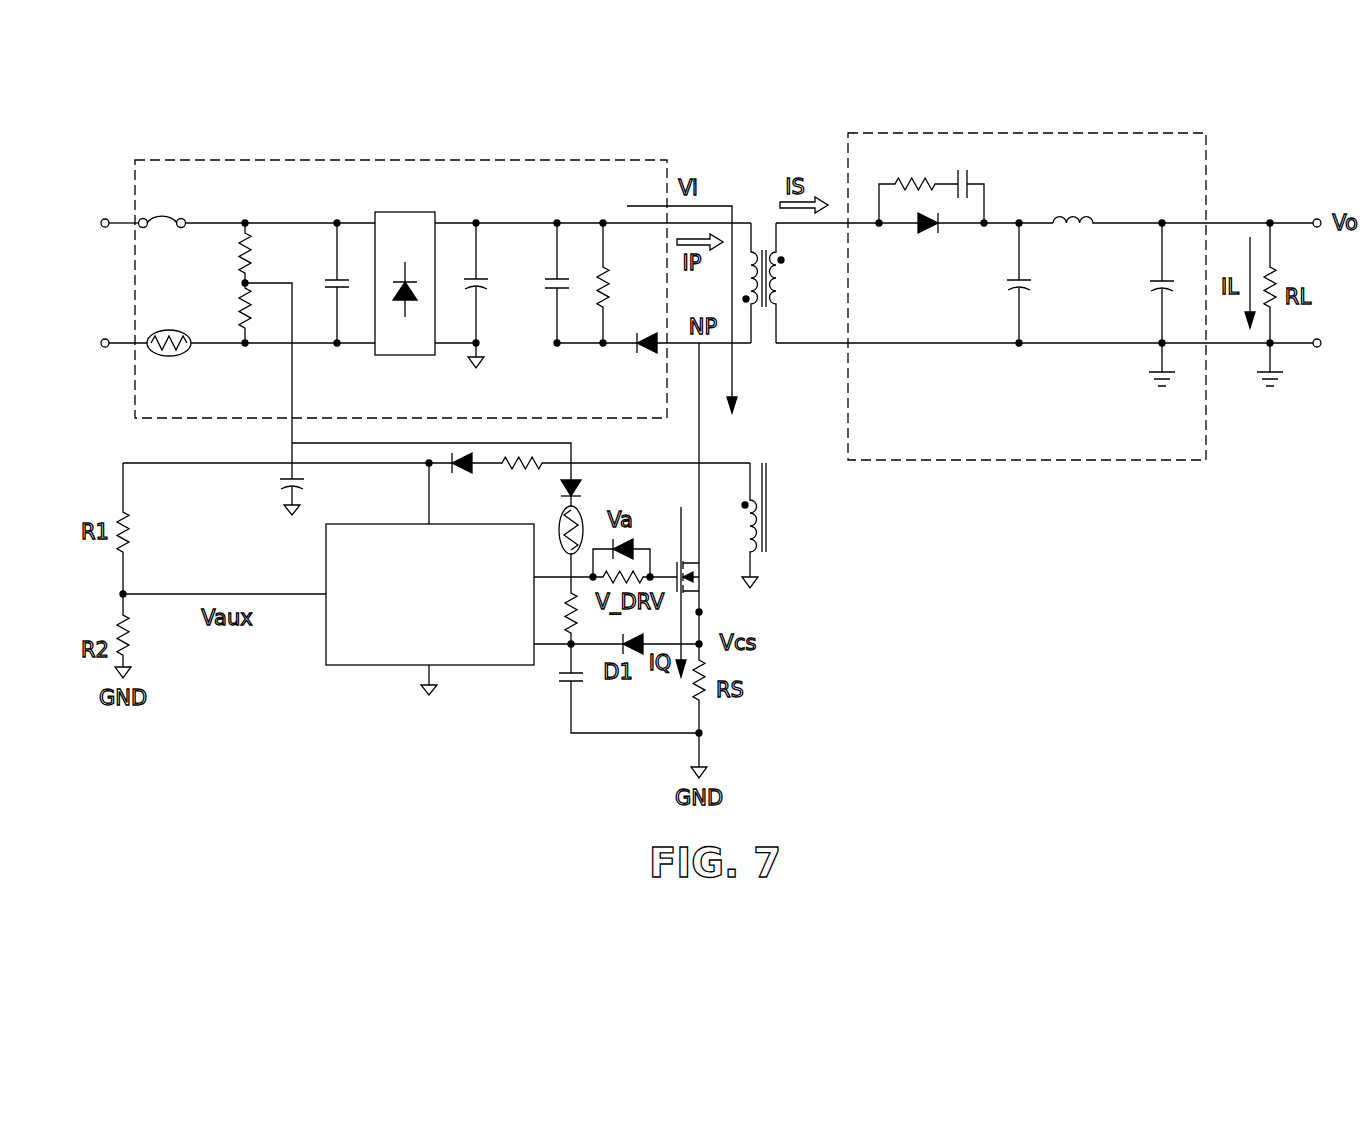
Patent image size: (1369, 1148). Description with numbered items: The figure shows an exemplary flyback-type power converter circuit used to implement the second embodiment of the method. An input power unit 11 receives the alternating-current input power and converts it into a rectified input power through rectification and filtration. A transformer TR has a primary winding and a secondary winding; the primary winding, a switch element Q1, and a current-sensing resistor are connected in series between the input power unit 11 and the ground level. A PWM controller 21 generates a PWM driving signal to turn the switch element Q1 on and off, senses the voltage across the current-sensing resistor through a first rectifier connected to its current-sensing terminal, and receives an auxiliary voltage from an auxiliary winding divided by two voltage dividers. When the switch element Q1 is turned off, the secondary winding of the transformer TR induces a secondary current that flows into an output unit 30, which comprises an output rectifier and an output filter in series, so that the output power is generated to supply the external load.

The input power unit 11 is at (393, 160).
The PWM controller 21 is at (354, 667).
The output unit 30 is at (1027, 133).
The transformer TR is at (742, 196).
The switch element Q1 is at (734, 592).